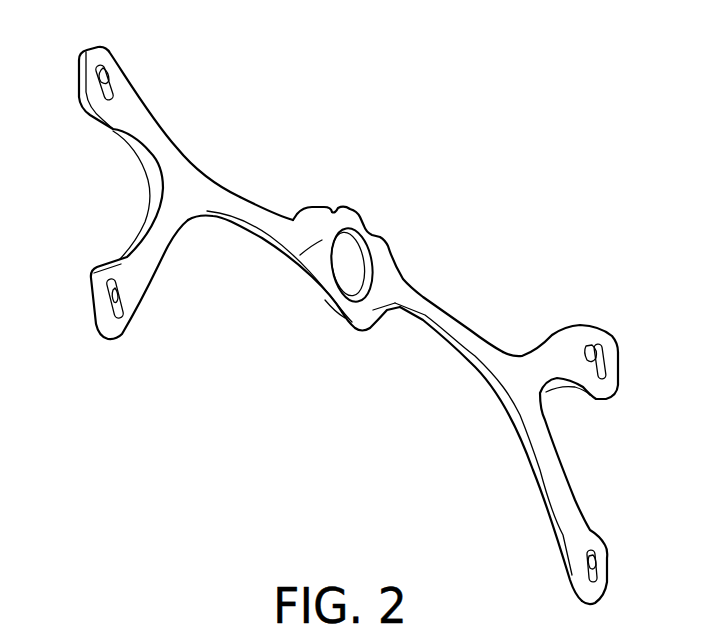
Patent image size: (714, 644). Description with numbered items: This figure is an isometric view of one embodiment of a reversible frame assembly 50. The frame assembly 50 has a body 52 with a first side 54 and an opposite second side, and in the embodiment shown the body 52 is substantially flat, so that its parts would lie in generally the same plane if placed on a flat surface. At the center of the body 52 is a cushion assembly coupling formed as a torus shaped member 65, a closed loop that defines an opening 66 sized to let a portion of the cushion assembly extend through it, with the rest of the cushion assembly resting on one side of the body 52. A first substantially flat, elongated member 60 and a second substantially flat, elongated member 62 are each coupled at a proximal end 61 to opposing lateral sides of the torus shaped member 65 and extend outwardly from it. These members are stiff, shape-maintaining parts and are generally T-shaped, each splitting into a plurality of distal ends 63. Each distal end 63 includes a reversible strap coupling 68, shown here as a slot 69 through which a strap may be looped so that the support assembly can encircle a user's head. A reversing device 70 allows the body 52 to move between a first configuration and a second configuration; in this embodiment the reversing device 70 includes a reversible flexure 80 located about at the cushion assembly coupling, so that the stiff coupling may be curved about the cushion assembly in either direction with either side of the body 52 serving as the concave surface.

The frame assembly 50 is at (460, 320).
The body 52 is at (248, 204).
The first side 54 is at (214, 186).
The first substantially flat, elongated member 60 is at (232, 210).
The proximal end 61 is at (291, 224).
The second substantially flat, elongated member 62 is at (502, 352).
The distal end 63 is at (112, 129).
The torus shaped member 65 is at (360, 314).
The opening 66 is at (346, 267).
The strap coupling 68 is at (103, 72).
The slot 69 is at (104, 80).
The reversing device 70 is at (318, 253).
The reversible flexure 80 is at (312, 228).